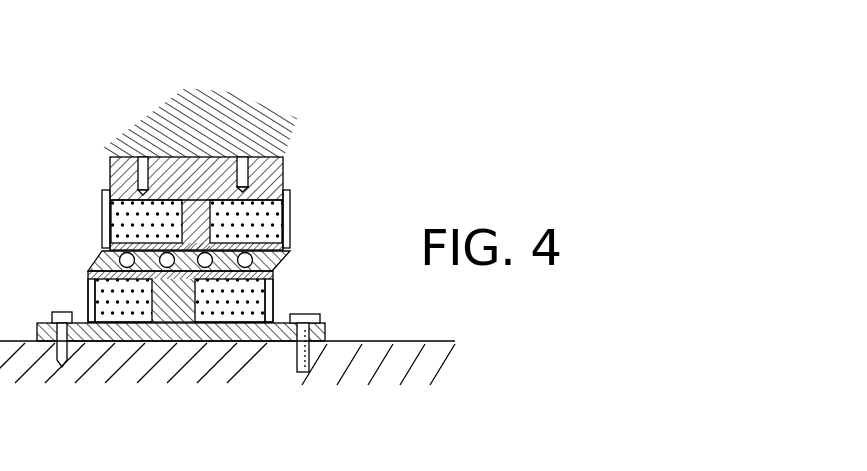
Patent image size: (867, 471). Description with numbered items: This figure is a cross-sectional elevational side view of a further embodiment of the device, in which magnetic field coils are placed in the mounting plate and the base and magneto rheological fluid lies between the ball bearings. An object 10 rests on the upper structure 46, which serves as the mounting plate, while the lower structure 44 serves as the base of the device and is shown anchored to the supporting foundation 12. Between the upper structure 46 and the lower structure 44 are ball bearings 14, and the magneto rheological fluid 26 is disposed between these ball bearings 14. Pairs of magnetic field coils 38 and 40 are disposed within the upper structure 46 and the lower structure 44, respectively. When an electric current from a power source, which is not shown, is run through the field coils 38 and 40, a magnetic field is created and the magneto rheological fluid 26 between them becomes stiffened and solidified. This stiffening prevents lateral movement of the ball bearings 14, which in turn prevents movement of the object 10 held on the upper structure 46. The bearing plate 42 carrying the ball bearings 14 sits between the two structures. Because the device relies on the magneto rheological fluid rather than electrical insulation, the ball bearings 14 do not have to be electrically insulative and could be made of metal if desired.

The object 10 is at (250, 110).
The foundation / ground 12 is at (388, 367).
The ball bearings 14 is at (160, 262).
The magneto rheological fluid 26 is at (216, 226).
The magnetic field coils 38 is at (88, 277).
The magnetic field coils 40 is at (272, 228).
The roller bearing plate 42 is at (90, 270).
The lower structure 44 is at (62, 367).
The upper structure 46 is at (177, 157).